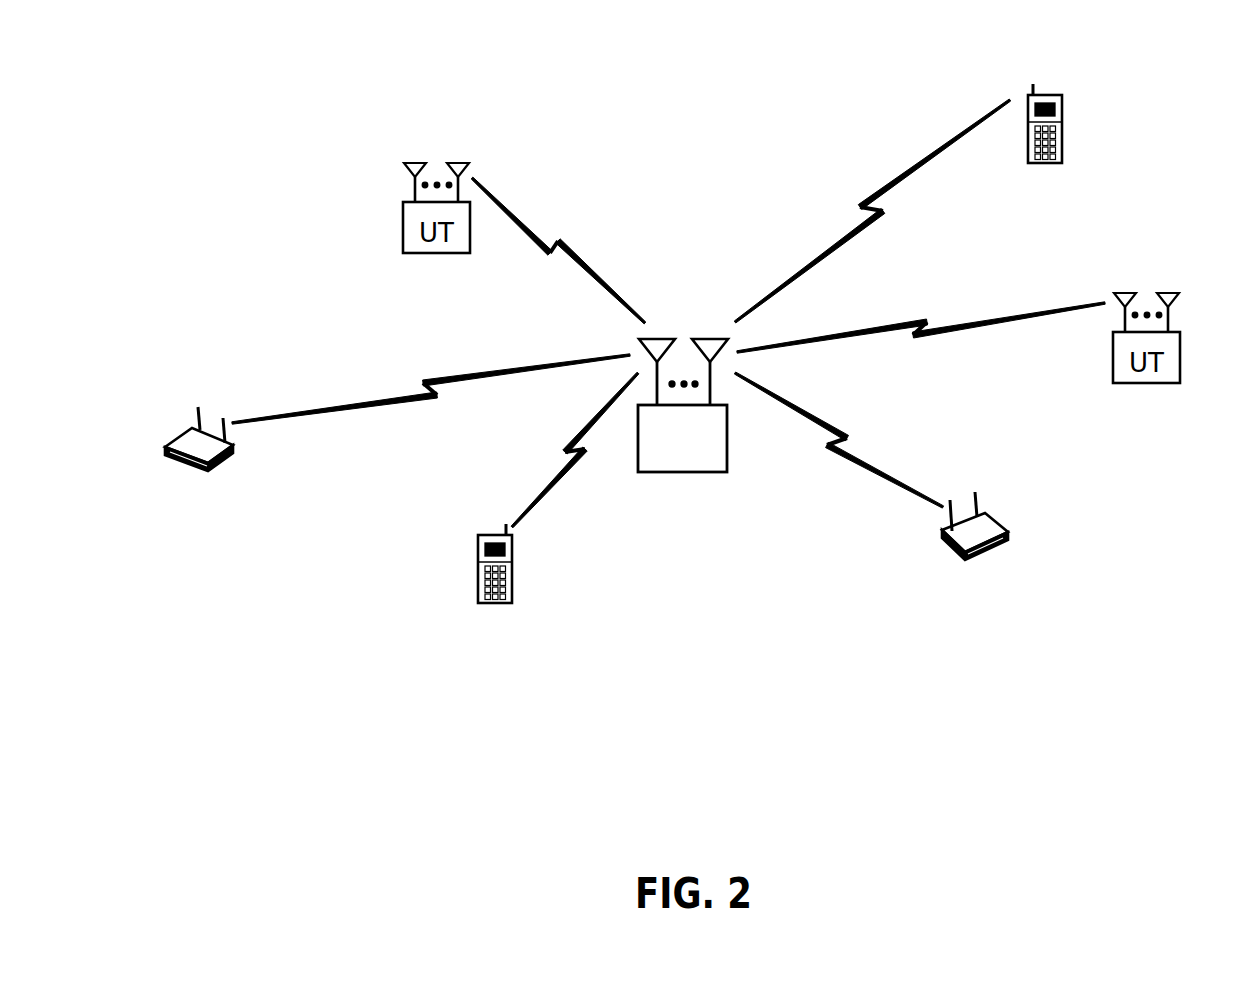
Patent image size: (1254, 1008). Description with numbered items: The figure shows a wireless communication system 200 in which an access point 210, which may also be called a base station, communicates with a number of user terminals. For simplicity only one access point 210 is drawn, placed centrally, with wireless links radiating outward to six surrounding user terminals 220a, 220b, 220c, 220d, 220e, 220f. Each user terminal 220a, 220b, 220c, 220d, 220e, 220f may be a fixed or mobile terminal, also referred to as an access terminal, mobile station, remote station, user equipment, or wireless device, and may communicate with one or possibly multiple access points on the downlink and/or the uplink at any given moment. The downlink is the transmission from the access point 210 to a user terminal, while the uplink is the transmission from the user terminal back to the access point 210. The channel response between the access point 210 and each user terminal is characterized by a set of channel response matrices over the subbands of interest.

The wireless communication system 200 is at (158, 73).
The access point 210 is at (727, 438).
The user terminal 220a is at (480, 580).
The user terminal 220b is at (190, 429).
The user terminal 220c is at (403, 238).
The user terminal 220d is at (1062, 136).
The user terminal 220e is at (1180, 362).
The user terminal 220f is at (1000, 520).